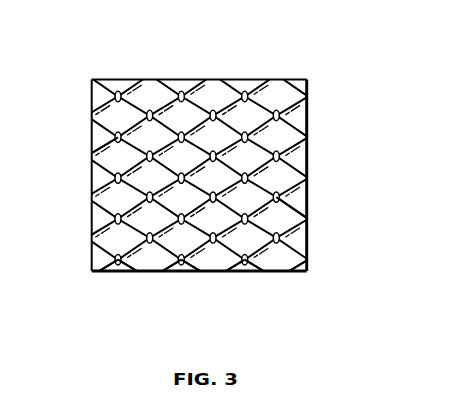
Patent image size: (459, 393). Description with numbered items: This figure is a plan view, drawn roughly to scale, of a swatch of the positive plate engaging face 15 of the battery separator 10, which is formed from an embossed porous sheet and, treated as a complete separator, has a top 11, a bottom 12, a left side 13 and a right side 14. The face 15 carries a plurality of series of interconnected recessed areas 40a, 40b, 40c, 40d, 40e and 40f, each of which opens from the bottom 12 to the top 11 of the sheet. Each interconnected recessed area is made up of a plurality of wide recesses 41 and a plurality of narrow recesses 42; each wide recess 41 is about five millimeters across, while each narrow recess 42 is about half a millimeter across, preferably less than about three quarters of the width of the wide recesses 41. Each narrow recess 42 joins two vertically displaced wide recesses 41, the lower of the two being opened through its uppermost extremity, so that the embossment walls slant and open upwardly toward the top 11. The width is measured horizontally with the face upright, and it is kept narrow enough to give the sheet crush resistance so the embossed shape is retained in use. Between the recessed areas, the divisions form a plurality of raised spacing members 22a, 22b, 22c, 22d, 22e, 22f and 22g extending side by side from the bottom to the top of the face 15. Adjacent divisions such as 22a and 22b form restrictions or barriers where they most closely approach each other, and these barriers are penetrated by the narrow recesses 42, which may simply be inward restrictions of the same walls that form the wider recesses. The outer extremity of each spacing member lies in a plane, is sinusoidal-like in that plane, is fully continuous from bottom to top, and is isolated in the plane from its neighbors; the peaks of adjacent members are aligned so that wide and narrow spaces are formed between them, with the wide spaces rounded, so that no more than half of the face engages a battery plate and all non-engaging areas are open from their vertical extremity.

The battery separator 10 is at (338, 90).
The top 11 is at (112, 80).
The bottom 12 is at (92, 272).
The left side 13 is at (308, 155).
The right side 14 is at (92, 177).
The positive plate engaging face 15 is at (110, 151).
The interconnected recessed area 40a is at (120, 82).
The interconnected recessed area 40b is at (150, 87).
The interconnected recessed area 40c is at (186, 85).
The interconnected recessed area 40d is at (215, 85).
The interconnected recessed area 40e is at (250, 85).
The interconnected recessed area 40f is at (280, 85).
The wide recess 41 is at (291, 214).
The narrow recess 42 is at (282, 236).
The division 22a is at (293, 272).
The division 22b is at (262, 272).
The division 22c is at (232, 272).
The division 22d is at (192, 272).
The division 22e is at (168, 272).
The division 22f is at (132, 272).
The division 22g is at (107, 272).